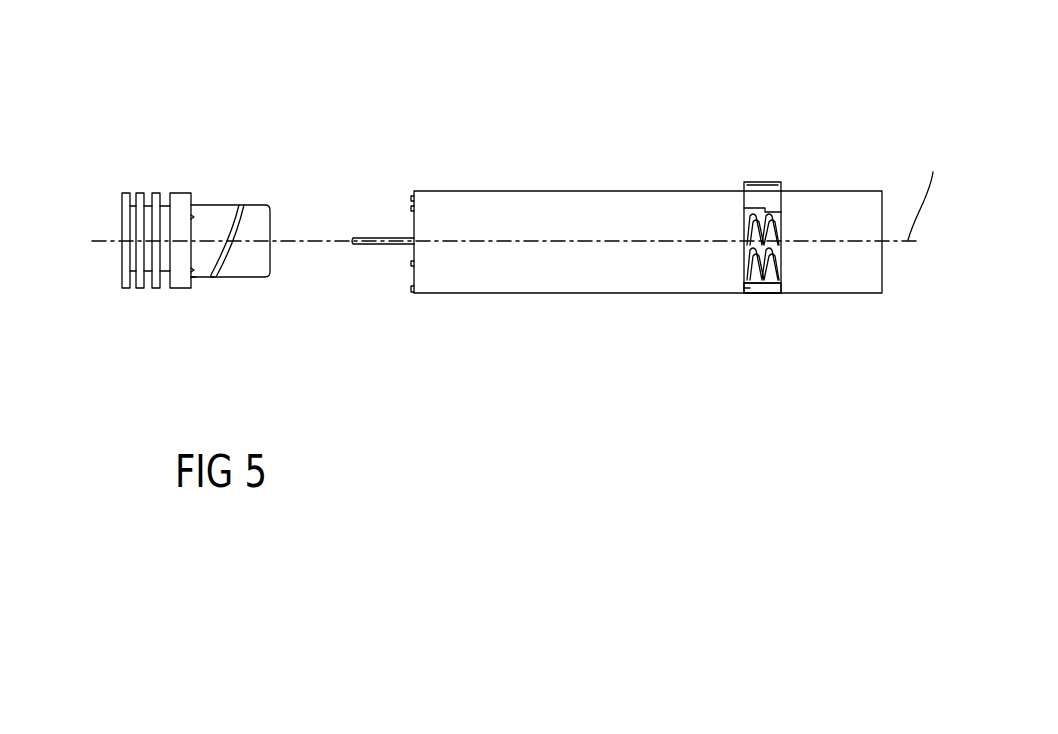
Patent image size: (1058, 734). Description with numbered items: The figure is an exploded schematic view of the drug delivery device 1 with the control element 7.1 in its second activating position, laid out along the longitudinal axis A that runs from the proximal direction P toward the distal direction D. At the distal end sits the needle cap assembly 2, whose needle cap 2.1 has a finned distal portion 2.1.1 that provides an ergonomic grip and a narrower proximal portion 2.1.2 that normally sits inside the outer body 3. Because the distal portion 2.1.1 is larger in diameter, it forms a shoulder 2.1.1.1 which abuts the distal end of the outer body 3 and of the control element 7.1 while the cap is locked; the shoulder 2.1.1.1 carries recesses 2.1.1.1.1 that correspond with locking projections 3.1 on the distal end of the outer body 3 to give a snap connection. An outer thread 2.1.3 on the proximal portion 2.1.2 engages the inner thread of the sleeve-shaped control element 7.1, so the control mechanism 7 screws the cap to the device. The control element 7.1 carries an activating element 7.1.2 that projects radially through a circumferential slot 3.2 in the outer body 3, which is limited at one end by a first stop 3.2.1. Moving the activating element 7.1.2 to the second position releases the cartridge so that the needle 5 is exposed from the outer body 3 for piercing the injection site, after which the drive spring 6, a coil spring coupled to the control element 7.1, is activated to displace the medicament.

The drug delivery device 1 is at (511, 143).
The needle cap assembly 2 is at (108, 163).
The needle cap 2.1 is at (157, 193).
The distal portion 2.1.1 is at (148, 288).
The shoulder 2.1.1.1 is at (193, 197).
The recesses 2.1.1.1.1 is at (192, 274).
The proximal portion 2.1.2 is at (257, 215).
The outer thread 2.1.3 is at (223, 258).
The outer body 3 is at (640, 205).
The locking projections 3.1 is at (413, 294).
The slot 3.2 is at (757, 295).
The first stop 3.2.1 is at (747, 295).
The needle 5 is at (373, 237).
The drive spring 6 is at (772, 228).
The control mechanism 7 is at (796, 160).
The control element 7.1 is at (778, 294).
The activating element 7.1.2 is at (763, 192).
The longitudinal axis A is at (925, 190).
The distal direction D is at (493, 241).
The proximal direction P is at (949, 239).